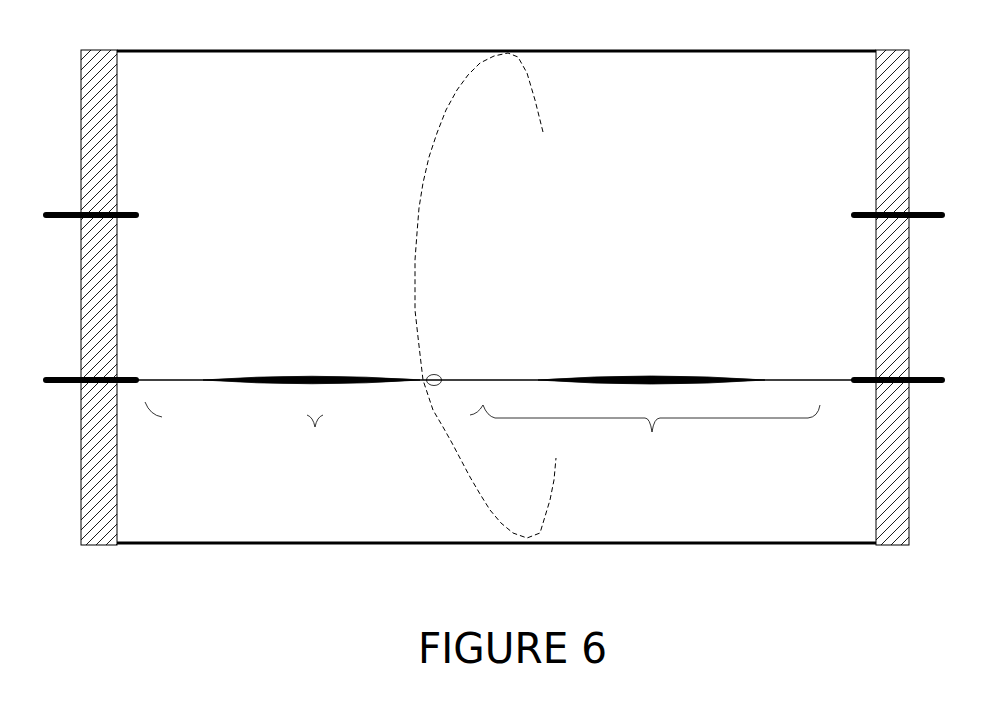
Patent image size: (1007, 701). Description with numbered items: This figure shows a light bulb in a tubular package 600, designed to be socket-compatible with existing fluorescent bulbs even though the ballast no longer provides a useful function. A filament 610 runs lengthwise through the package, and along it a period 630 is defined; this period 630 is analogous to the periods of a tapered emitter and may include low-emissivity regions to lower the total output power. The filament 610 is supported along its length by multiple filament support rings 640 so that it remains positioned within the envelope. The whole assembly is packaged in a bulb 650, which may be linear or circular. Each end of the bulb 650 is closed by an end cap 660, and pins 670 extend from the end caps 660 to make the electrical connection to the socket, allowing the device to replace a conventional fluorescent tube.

The tubular package 600 is at (823, 588).
The filament 610 is at (503, 368).
The period 630 is at (482, 418).
The filament support ring 640 is at (418, 285).
The bulb 650 is at (238, 37).
The end cap 660 is at (103, 48).
The pin 670 is at (53, 376).